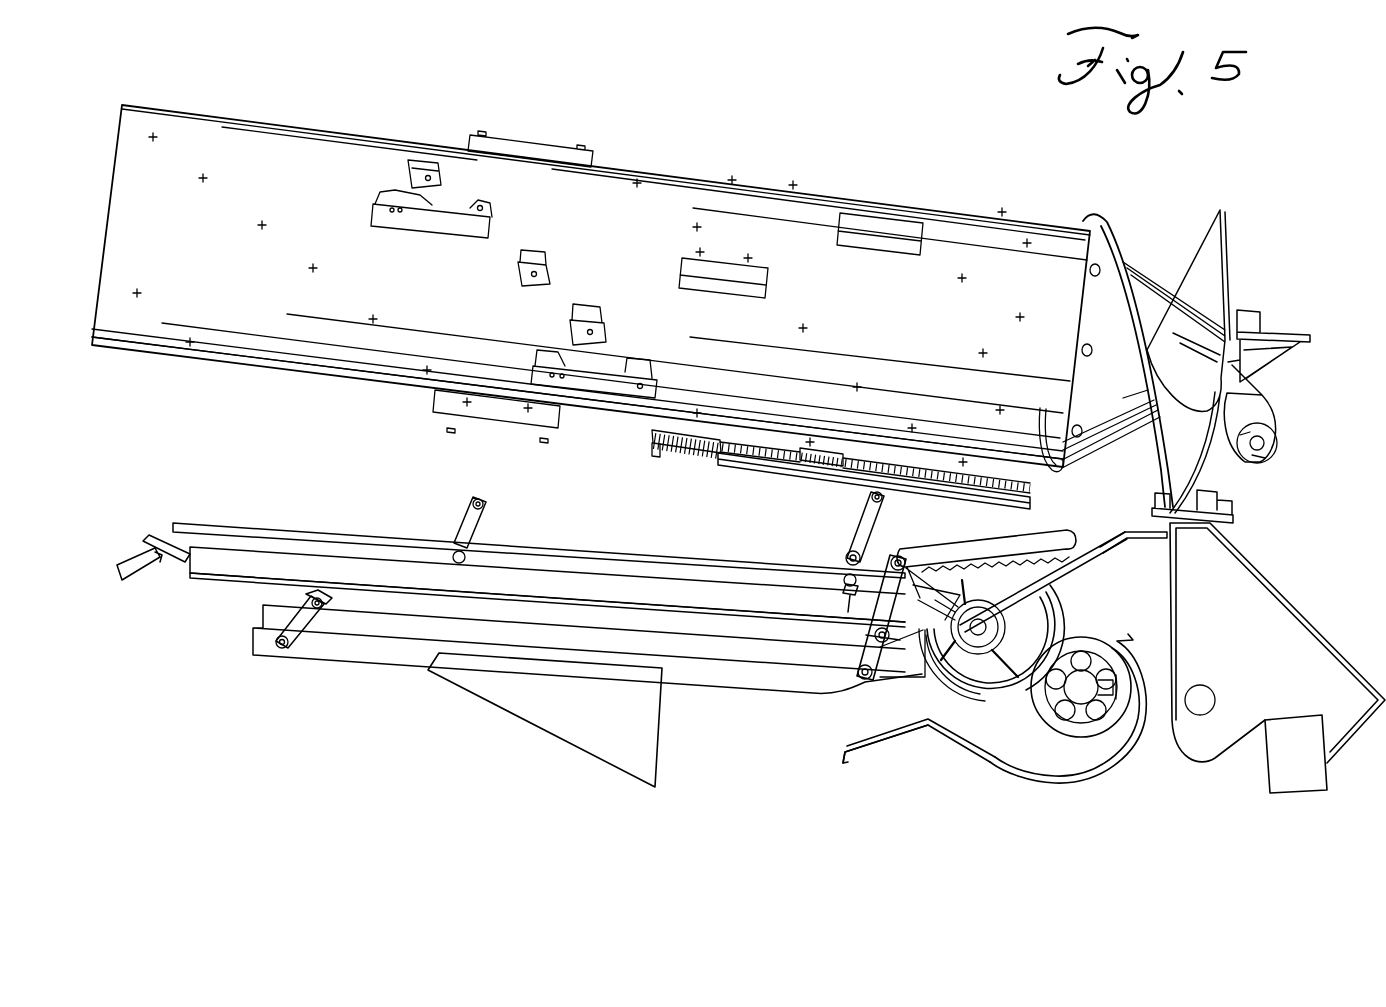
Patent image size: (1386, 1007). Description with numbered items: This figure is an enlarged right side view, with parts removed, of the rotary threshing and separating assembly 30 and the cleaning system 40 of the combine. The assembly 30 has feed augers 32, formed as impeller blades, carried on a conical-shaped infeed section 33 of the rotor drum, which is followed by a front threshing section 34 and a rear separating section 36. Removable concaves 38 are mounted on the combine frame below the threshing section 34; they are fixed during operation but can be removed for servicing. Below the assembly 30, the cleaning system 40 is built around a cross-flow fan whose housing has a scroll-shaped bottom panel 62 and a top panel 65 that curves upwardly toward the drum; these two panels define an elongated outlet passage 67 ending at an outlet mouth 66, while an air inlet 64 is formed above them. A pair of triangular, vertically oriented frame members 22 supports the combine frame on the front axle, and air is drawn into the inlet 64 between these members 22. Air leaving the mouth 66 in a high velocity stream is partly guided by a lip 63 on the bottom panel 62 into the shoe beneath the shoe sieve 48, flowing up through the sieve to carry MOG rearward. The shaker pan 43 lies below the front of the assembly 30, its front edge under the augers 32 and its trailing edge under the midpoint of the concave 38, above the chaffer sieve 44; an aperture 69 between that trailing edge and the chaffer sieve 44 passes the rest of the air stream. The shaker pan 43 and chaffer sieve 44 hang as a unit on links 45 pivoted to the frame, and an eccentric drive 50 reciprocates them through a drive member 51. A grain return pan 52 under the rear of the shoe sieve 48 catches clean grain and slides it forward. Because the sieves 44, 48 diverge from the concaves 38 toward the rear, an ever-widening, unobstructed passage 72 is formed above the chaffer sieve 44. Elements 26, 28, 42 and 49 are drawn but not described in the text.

The frame members 22 is at (1250, 598).
The drive pulley bracket 26 is at (1270, 460).
The mounting block 28 is at (1265, 780).
The rotary threshing and separating assembly 30 is at (822, 166).
The feed augers 32 is at (1201, 238).
The infeed section 33 is at (1140, 290).
The front threshing section 34 is at (951, 230).
The rear separating section 36 is at (625, 183).
The concaves 38 is at (975, 490).
The cleaning system 40 is at (364, 718).
The link bar 42 is at (975, 560).
The shaker pan 43 is at (1040, 548).
The chaffer sieve 44 is at (689, 575).
The links 45 is at (470, 530).
The shoe sieve 48 is at (783, 652).
The end bracket 49 is at (123, 560).
The eccentric drive 50 is at (1092, 540).
The drive member 51 is at (937, 558).
The grain return pan 52 is at (612, 721).
The bottom panel 62 is at (1033, 791).
The lip 63 is at (870, 750).
The air inlet 64 is at (1087, 628).
The top panel 65 is at (975, 695).
The outlet mouth 66 is at (913, 690).
The outlet passage 67 is at (960, 663).
The aperture 69 is at (843, 598).
The passage 72 is at (310, 466).